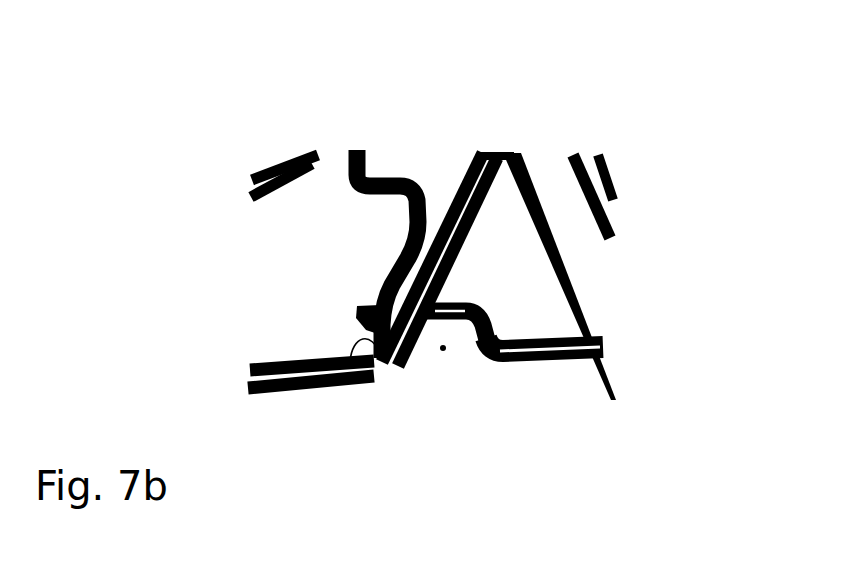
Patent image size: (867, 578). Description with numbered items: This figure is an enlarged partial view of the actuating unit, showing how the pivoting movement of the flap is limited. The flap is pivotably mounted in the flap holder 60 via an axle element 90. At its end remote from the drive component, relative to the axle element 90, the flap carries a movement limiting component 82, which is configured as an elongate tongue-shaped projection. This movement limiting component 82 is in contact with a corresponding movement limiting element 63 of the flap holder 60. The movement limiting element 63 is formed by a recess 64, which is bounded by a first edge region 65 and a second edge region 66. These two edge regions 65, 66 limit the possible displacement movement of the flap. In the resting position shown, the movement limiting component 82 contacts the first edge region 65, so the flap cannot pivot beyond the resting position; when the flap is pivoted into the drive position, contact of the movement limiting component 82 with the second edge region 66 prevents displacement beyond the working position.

The movement limiting component 82 is at (412, 272).
The movement limiting element 63 is at (458, 398).
The second edge region 66 is at (487, 322).
The flap holder 60 is at (262, 255).
The first edge region 65 is at (352, 382).
The recess 64 is at (443, 348).
The axle element 90 is at (731, 406).